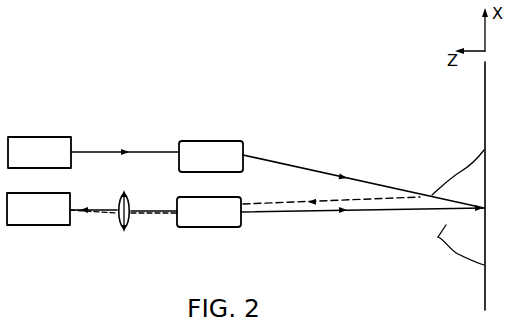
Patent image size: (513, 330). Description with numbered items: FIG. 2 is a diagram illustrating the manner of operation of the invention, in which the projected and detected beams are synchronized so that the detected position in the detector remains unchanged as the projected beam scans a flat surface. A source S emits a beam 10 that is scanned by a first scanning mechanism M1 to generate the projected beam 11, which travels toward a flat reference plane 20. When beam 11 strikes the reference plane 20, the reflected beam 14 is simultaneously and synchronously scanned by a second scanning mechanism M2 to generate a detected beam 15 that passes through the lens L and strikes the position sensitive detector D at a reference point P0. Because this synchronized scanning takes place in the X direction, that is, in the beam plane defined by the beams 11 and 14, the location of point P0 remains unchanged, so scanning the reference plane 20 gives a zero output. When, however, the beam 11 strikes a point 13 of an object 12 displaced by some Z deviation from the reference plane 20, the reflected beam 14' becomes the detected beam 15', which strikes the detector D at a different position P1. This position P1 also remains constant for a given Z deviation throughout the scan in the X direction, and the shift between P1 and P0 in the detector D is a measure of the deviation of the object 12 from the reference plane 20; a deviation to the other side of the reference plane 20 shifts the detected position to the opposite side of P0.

The beam 10 is at (106, 151).
The beam 11 is at (306, 169).
The object 12 is at (438, 237).
The point 13 is at (438, 237).
The reflected beam 14 is at (362, 234).
The reflected beam 14' is at (331, 229).
The detected beam 15 is at (154, 233).
The detected beam 15' is at (154, 189).
The flat reference plane 20 is at (485, 281).
The source S is at (39, 152).
The position sensitive detector D is at (38, 209).
The lens L is at (126, 231).
The first scanning mechanism M1 is at (211, 156).
The second scanning mechanism M2 is at (209, 212).
The reference point P0 is at (70, 207).
The position P1 is at (70, 215).